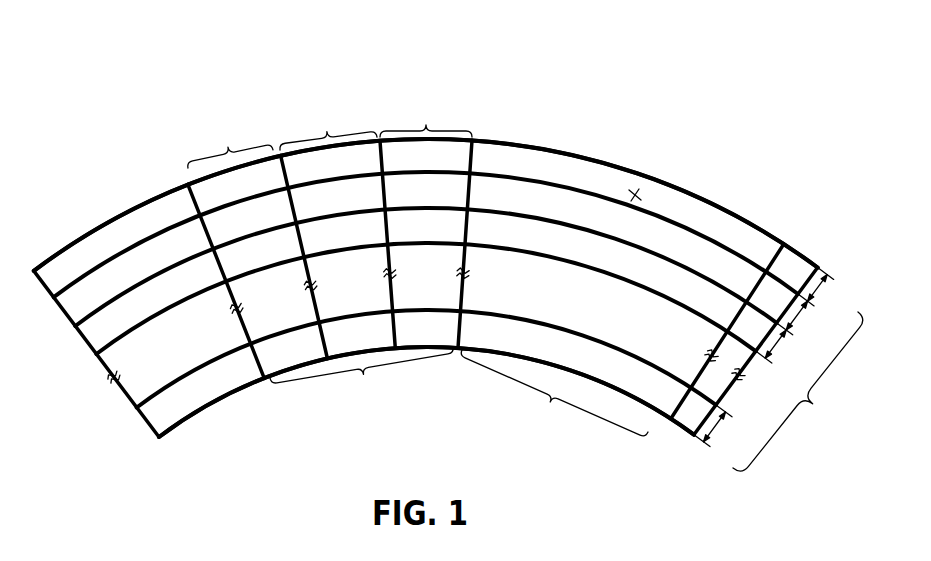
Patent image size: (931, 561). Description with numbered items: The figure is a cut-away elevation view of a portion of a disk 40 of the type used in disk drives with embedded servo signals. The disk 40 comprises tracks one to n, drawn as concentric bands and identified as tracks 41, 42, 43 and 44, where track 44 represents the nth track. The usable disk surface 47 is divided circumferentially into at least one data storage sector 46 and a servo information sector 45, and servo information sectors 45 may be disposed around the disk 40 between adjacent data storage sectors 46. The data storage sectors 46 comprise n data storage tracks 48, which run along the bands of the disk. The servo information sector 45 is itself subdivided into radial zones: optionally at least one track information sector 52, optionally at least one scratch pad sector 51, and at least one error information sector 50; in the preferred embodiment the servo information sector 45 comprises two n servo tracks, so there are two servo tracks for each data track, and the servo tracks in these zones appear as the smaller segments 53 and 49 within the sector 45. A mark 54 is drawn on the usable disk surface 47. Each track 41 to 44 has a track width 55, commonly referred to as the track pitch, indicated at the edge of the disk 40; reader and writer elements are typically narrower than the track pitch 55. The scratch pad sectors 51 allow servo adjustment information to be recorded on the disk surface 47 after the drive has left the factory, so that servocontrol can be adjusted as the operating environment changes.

The disk 40 is at (126, 80).
The track 1 41 is at (46, 291).
The track 2 42 is at (67, 318).
The track 3 43 is at (89, 347).
The track n 44 is at (150, 428).
The servo information sector 45 is at (361, 382).
The data storage sector 46 is at (575, 395).
The usable disk surface 47 is at (773, 363).
The data storage track 48 is at (426, 294).
The conductor segment 49 is at (393, 245).
The error information sector 50 is at (329, 126).
The scratch pad sector 51 is at (426, 116).
The track information sector 52 is at (233, 152).
The conductor segment 53 is at (258, 267).
The registration mark 54 is at (641, 190).
The track width 55 is at (770, 365).